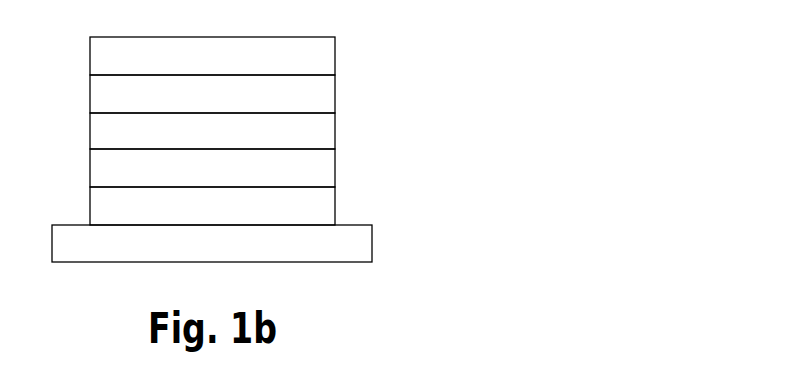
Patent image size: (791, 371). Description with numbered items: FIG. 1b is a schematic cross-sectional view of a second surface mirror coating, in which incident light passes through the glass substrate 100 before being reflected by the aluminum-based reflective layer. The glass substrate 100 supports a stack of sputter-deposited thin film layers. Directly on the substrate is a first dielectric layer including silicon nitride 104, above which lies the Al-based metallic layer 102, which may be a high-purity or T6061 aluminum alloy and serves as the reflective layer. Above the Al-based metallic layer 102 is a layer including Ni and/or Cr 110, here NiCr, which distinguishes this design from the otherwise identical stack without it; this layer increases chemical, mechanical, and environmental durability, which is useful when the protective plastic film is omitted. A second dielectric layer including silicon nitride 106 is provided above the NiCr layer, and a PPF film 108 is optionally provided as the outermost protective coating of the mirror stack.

The glass substrate 100 is at (372, 243).
The first layer including silicon nitride 104 is at (335, 205).
The Al-based metallic layer 102 is at (335, 167).
The layer including Ni and/or Cr 110 is at (335, 130).
The second layer including silicon nitride 106 is at (335, 92).
The PPF film 108 is at (335, 55).